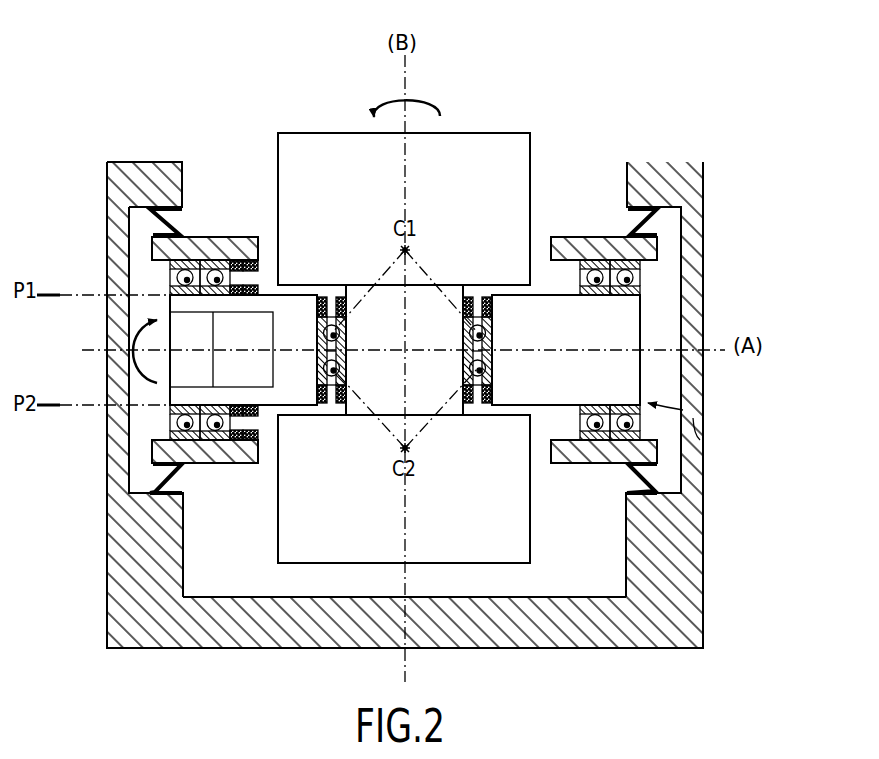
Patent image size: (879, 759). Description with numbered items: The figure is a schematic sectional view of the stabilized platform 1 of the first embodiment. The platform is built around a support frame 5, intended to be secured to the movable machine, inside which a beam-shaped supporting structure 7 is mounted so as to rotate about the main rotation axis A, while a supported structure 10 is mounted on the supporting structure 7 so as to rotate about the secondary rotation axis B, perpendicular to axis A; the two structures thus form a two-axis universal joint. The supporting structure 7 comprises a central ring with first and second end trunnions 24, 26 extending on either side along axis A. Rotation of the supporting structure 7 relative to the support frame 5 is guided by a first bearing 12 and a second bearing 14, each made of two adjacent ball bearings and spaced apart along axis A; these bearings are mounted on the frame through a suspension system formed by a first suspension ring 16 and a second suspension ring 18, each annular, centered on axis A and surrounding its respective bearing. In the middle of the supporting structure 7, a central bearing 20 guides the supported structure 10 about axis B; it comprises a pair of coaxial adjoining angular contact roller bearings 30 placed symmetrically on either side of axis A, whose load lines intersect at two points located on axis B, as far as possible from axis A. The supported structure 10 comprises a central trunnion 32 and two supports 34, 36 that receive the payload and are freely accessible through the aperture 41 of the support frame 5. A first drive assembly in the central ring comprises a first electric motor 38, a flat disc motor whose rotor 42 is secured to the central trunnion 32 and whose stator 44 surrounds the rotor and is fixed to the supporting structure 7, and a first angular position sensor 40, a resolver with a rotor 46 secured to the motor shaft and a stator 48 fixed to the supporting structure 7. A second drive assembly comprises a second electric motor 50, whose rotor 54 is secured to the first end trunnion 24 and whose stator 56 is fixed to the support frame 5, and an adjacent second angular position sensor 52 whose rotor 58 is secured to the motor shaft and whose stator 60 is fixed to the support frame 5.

The stabilized platform 1 is at (157, 77).
The support frame 5 is at (640, 612).
The supporting structure 7 is at (700, 439).
The supported structure 10 is at (298, 122).
The first bearing 12 is at (152, 247).
The second bearing 14 is at (588, 258).
The first suspension ring 16 is at (157, 219).
The second suspension ring 18 is at (660, 222).
The central bearing 20 is at (308, 320).
The first end trunnion 24 is at (178, 300).
The second end trunnion 26 is at (627, 385).
The roller bearings 30 is at (478, 328).
The central trunnion 32 is at (378, 393).
The first support 34 is at (488, 145).
The second support 36 is at (502, 560).
The first electric motor 38 is at (323, 297).
The first angular position sensor 40 is at (320, 405).
The aperture 41 is at (190, 163).
The rotor 42 is at (467, 297).
The stator 44 is at (483, 297).
The rotor of the resolver 46 is at (470, 405).
The stator of the resolver 48 is at (488, 405).
The second electric motor 50 is at (253, 255).
The second angular position sensor 52 is at (233, 255).
The rotor 54 is at (260, 432).
The stator 56 is at (238, 463).
The rotor 58 is at (173, 422).
The stator 60 is at (153, 456).